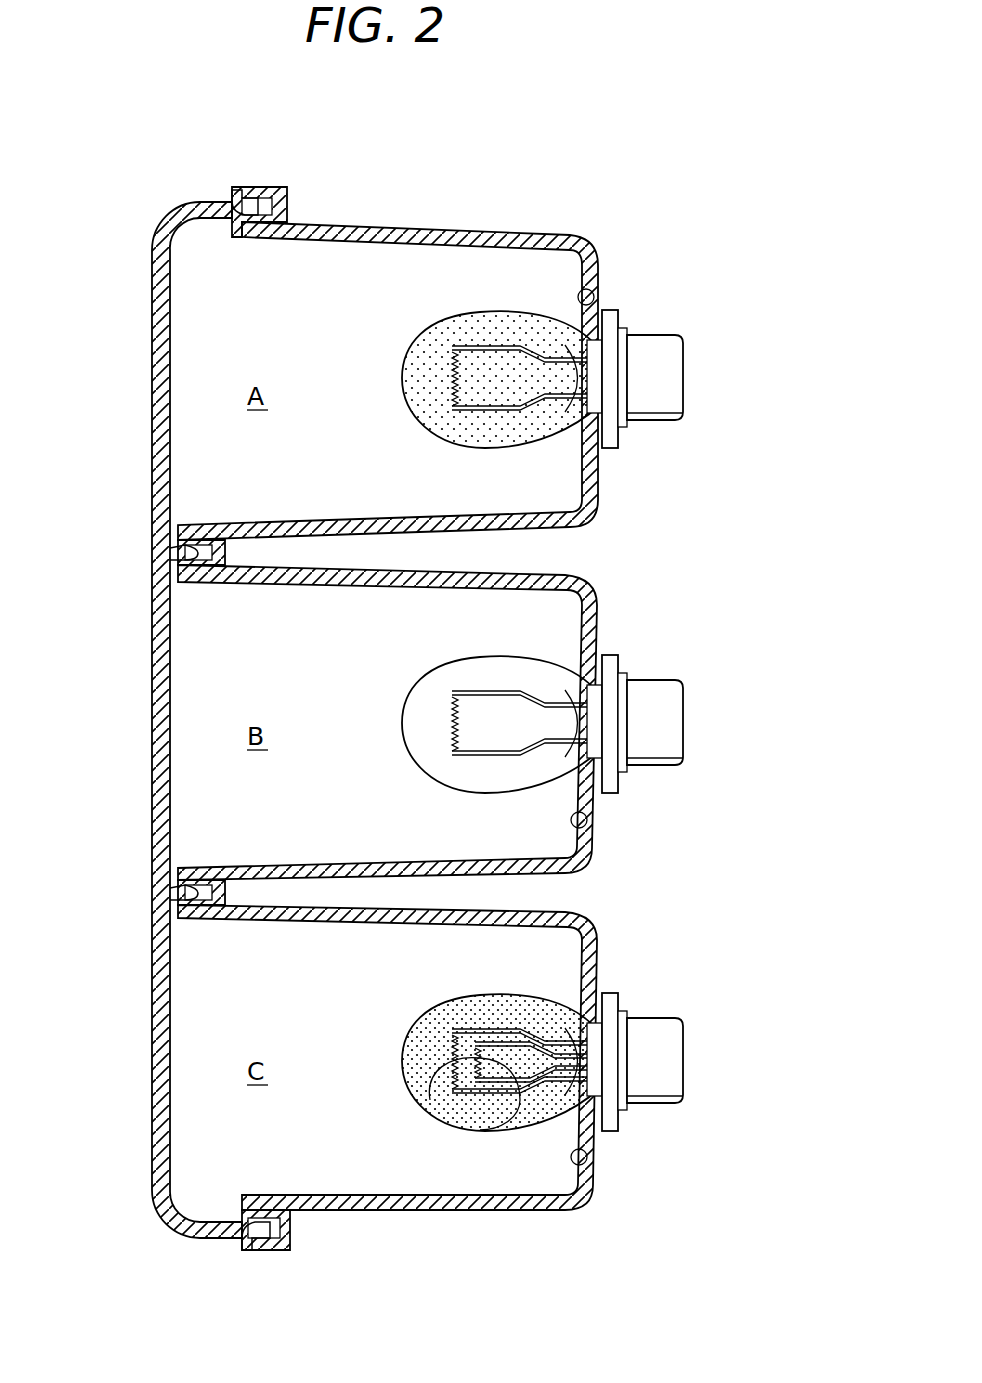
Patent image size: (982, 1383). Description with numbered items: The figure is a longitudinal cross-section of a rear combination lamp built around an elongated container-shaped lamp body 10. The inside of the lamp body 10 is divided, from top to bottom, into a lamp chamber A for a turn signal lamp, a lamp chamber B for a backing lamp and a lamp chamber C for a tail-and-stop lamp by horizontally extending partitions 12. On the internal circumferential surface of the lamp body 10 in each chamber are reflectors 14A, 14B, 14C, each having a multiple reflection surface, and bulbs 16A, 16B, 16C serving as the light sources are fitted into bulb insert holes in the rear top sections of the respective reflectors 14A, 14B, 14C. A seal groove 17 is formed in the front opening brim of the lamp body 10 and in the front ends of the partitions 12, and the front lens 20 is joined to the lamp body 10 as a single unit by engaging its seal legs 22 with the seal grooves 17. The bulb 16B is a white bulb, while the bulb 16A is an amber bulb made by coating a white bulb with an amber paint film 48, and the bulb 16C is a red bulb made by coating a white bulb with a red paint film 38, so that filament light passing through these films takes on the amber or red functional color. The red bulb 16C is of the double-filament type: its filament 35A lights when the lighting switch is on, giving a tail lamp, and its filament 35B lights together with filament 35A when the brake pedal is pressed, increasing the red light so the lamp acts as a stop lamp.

The lamp body 10 is at (472, 222).
The partitions 12 is at (490, 552).
The reflector 14A is at (600, 292).
The reflector 14B is at (597, 812).
The reflector 14C is at (596, 1150).
The bulb 16A is at (490, 312).
The bulb 16B is at (530, 658).
The bulb 16C is at (520, 993).
The seal groove 17 is at (232, 192).
The front lens 20 is at (152, 730).
The seal legs 22 is at (268, 187).
The filament 35A is at (440, 1110).
The filament 35B is at (518, 1110).
The red paint film 38 is at (415, 1035).
The amber paint film 48 is at (415, 345).